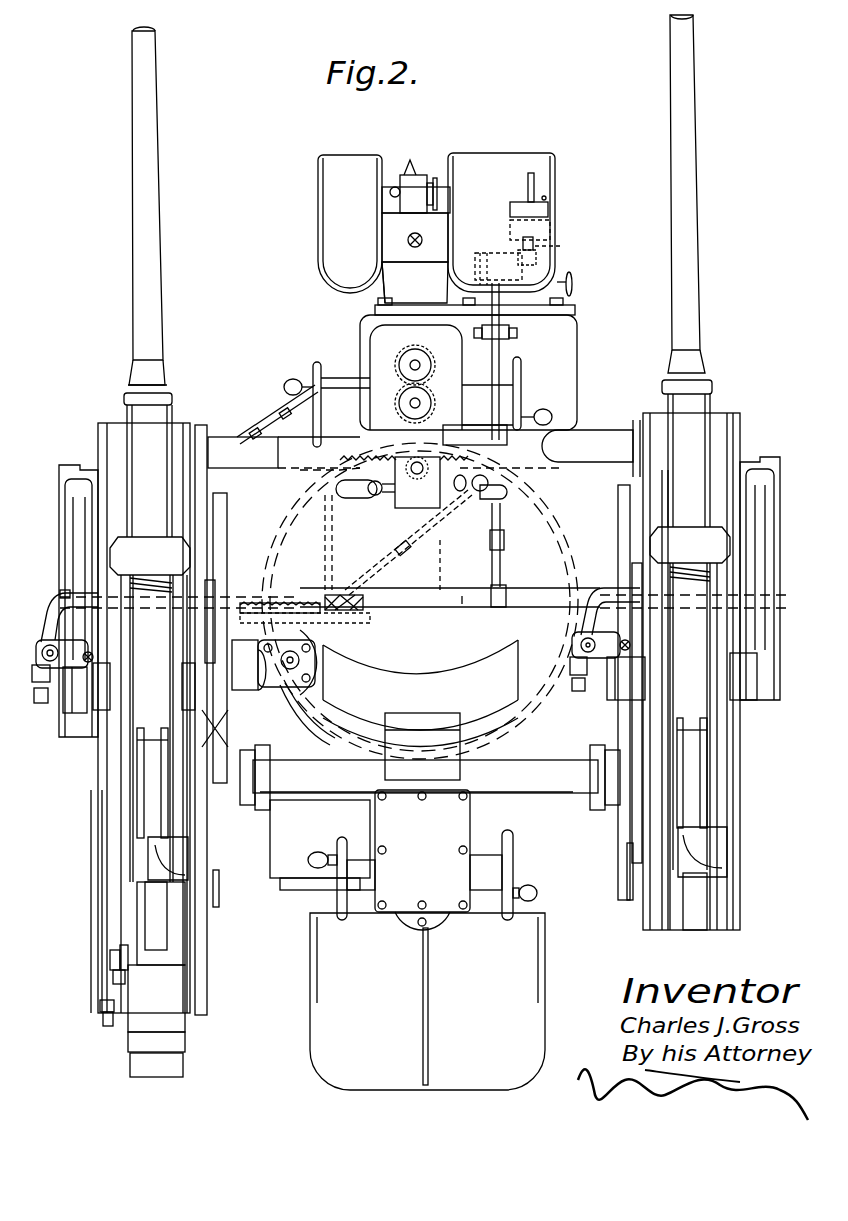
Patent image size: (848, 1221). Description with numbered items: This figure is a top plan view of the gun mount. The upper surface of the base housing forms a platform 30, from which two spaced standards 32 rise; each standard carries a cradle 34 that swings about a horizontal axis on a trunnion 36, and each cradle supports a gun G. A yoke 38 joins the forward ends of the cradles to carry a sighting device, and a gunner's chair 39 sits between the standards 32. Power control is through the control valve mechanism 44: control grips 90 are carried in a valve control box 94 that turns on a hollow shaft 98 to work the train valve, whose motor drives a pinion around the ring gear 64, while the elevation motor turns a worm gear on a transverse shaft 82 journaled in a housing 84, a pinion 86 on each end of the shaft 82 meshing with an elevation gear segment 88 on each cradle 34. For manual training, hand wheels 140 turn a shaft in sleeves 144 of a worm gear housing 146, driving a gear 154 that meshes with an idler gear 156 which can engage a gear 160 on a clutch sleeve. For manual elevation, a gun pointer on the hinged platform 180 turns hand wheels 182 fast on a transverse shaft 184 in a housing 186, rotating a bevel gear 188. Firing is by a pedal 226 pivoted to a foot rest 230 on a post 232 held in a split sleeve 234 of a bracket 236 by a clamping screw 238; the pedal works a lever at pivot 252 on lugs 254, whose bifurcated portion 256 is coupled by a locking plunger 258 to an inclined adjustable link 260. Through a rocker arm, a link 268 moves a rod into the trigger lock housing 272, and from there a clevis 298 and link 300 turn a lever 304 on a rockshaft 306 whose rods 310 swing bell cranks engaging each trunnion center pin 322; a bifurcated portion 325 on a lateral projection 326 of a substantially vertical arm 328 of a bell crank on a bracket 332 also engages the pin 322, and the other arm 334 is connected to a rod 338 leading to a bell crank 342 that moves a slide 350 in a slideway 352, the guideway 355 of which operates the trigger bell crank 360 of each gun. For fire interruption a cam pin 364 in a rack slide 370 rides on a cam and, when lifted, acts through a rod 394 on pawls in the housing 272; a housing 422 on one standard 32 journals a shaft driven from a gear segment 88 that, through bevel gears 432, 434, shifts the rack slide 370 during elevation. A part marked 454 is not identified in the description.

The gun G is at (140, 284).
The platform 30 is at (577, 380).
The standards 32 is at (75, 512).
The cradle 34 is at (112, 430).
The trunnion 36 is at (250, 690).
The yoke 38 is at (220, 440).
The gunner's chair 39 is at (445, 660).
The control valve mechanism 44 is at (373, 496).
The ring gear 64 is at (300, 472).
The transverse shaft 82 is at (540, 790).
The housing 84 is at (405, 705).
The pinion 86 is at (240, 775).
The elevation gear segment 88 is at (218, 900).
The control grips 90 is at (340, 492).
The valve control box 94 is at (400, 508).
The hollow shaft 98 is at (438, 530).
The hand wheels 140 is at (312, 378).
The sleeves 144 is at (480, 395).
The worm gear housing 146 is at (372, 352).
The gear 154 is at (412, 345).
The idler gear 156 is at (395, 403).
The gear 160 is at (395, 448).
The platform 180 is at (510, 1075).
The hand wheels 182 is at (503, 835).
The transverse shaft 184 is at (520, 885).
The housing 186 is at (377, 828).
The bevel gear 188 is at (337, 840).
The pedal 226 is at (548, 210).
The foot rest 230 is at (392, 228).
The post 232 is at (414, 232).
The split sleeve 234 is at (430, 183).
The bracket 236 is at (384, 285).
The clamping screw 238 is at (393, 187).
The pivot 252 is at (520, 270).
The lugs 254 is at (480, 255).
The bifurcated portion 256 is at (500, 262).
The spring-pressed locking plunger 258 is at (572, 290).
The inclined adjustable link 260 is at (463, 268).
The link 268 is at (502, 348).
The trigger lock housing 272 is at (550, 485).
The clevis 298 is at (506, 537).
The link 300 is at (492, 530).
The lever 304 is at (508, 592).
The transverse rockshaft 306 is at (470, 588).
The rod 310 is at (465, 578).
The trunnion center pin 322 is at (88, 663).
The bifurcated portion 325 is at (42, 683).
The lateral projection 326 is at (45, 704).
The substantially vertical arm 328 is at (80, 714).
The bracket 332 is at (592, 585).
The arm 334 is at (62, 630).
The longitudinally extending rod 338 is at (100, 872).
The bell crank 342 is at (110, 1026).
The slide 350 is at (113, 978).
The slideway 352 is at (110, 958).
The guideway 355 is at (120, 950).
The trigger bell crank 360 is at (100, 1006).
The cam pin 364 is at (330, 596).
The rack slide 370 is at (258, 603).
The rod 394 is at (395, 548).
The housing 422 is at (307, 712).
The bevel gear 432 is at (312, 658).
The bevel gear 434 is at (332, 662).
The link 454 is at (495, 483).